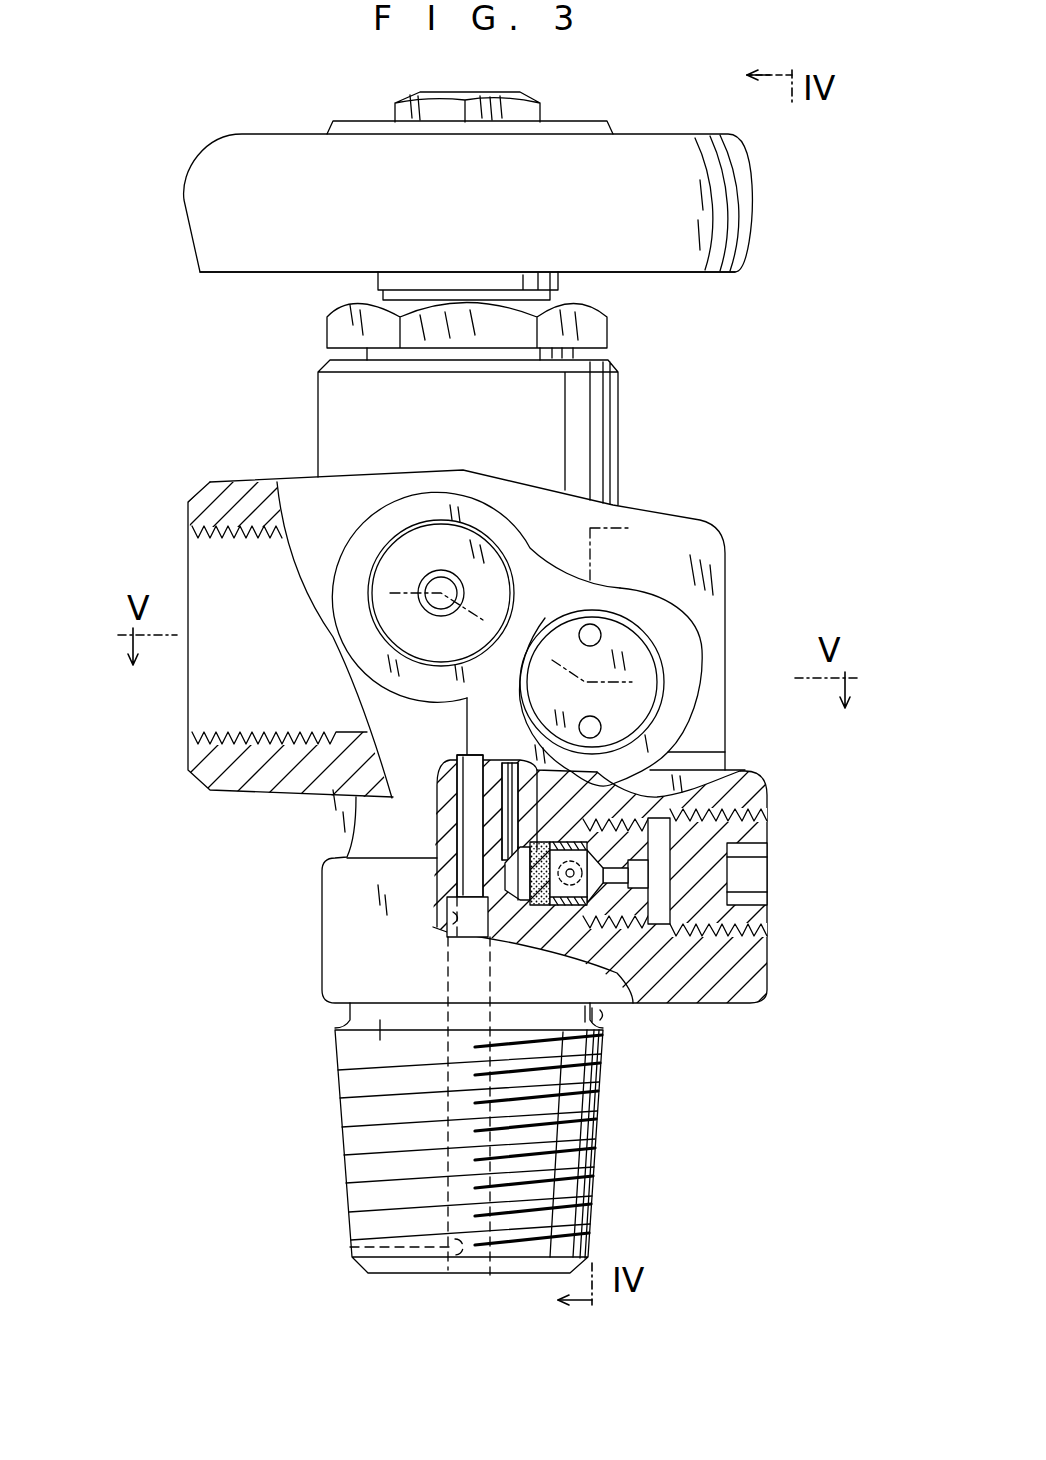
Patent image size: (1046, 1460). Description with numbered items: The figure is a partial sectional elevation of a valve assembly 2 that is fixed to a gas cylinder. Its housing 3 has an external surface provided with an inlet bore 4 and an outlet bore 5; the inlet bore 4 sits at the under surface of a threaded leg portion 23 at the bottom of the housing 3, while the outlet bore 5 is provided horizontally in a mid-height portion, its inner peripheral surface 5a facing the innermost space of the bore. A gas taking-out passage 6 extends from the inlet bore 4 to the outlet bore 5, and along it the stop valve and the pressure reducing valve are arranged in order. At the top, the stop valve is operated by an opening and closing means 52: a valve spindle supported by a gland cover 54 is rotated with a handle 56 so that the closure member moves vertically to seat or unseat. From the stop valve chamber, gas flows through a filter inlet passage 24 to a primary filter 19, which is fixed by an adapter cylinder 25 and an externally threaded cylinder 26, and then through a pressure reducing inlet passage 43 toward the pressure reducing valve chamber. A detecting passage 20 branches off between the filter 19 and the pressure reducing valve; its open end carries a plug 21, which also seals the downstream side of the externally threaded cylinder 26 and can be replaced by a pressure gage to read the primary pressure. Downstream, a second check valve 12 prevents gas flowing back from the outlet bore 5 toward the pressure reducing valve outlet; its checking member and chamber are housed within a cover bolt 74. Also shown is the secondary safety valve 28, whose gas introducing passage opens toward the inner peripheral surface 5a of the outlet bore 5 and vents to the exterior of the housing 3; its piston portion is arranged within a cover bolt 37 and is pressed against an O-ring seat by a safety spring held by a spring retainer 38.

The valve assembly 2 is at (773, 438).
The housing 3 is at (308, 926).
The inlet bore 4 is at (350, 1248).
The outlet bore 5 is at (222, 572).
The inner peripheral surface 5a is at (207, 740).
The gas taking-out passage 6 is at (445, 928).
The second check valve 12 is at (652, 620).
The primary filter 19 is at (547, 900).
The detecting passage 20 is at (657, 910).
The plug 21 is at (760, 827).
The threaded leg portion 23 is at (598, 1145).
The filter inlet passage 24 is at (520, 765).
The adapter cylinder 25 is at (590, 923).
The externally threaded cylinder 26 is at (627, 907).
The secondary safety valve 28 is at (411, 515).
The cover bolt 37 is at (393, 570).
The spring retainer 38 is at (452, 583).
The pressure reducing inlet passage 43 is at (570, 888).
The opening and closing means 52 is at (526, 251).
The gland cover 54 is at (608, 323).
The handle 56 is at (747, 218).
The cover bolt 74 is at (643, 672).